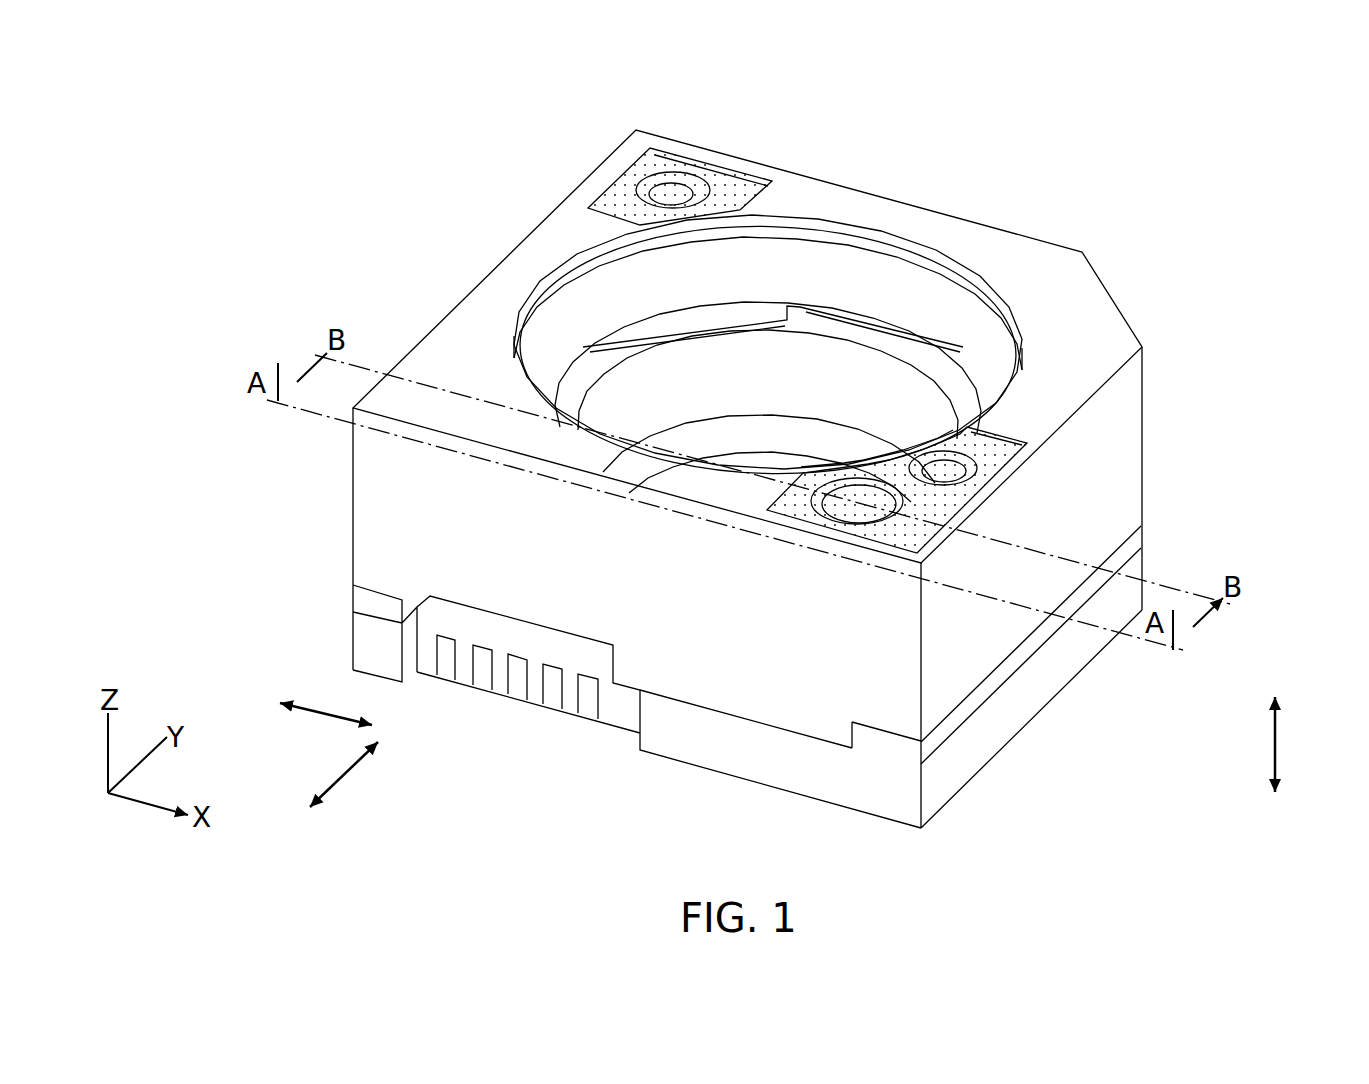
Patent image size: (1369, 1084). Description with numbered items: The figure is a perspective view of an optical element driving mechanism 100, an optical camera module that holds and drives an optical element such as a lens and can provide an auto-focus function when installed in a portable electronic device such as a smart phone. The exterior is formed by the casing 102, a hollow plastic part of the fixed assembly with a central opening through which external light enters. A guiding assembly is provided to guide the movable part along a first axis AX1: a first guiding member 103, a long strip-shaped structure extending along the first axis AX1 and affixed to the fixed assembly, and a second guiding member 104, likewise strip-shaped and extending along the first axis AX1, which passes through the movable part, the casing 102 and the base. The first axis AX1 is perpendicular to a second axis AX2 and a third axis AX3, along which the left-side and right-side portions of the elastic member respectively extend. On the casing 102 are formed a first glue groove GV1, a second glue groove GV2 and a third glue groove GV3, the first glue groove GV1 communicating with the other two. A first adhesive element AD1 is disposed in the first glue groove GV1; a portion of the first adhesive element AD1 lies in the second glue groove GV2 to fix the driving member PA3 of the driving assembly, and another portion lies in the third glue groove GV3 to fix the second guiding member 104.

The optical element driving mechanism 100 is at (332, 89).
The casing 102 is at (893, 198).
The first guiding member 103 is at (673, 192).
The second guiding member 104 is at (880, 498).
The first adhesive element AD1 is at (1014, 432).
The first glue groove GV1 is at (973, 457).
The second glue groove GV2 is at (855, 528).
The third glue groove GV3 is at (950, 470).
The driving member PA3 is at (935, 548).
The first axis AX1 is at (1273, 763).
The second axis AX2 is at (294, 705).
The third axis AX3 is at (357, 774).